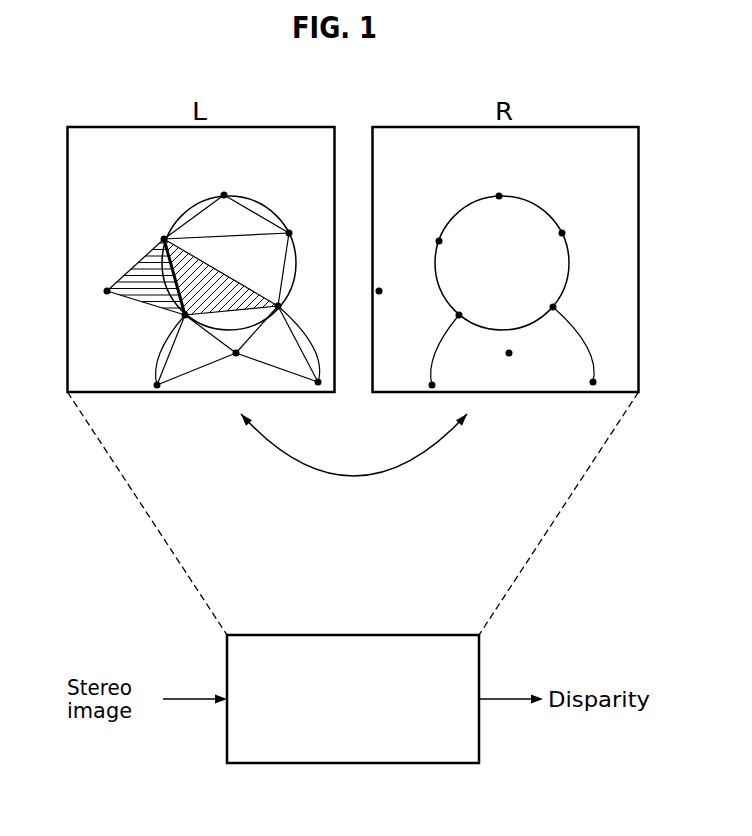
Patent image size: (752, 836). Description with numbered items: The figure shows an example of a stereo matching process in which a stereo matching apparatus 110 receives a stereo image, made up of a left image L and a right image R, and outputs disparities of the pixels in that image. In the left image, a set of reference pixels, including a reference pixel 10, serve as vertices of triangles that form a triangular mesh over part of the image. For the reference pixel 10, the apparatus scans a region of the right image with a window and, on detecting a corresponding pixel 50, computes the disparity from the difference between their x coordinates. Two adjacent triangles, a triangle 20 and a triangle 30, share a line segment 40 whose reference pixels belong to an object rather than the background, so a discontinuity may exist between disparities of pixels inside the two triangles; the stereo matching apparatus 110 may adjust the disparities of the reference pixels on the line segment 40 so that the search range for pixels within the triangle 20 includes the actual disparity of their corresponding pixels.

The reference pixel 10 is at (106, 292).
The triangle 20 is at (142, 272).
The triangle 30 is at (210, 275).
The line segment 40 is at (172, 268).
The corresponding pixel 50 is at (382, 287).
The stereo matching apparatus 110 is at (353, 633).